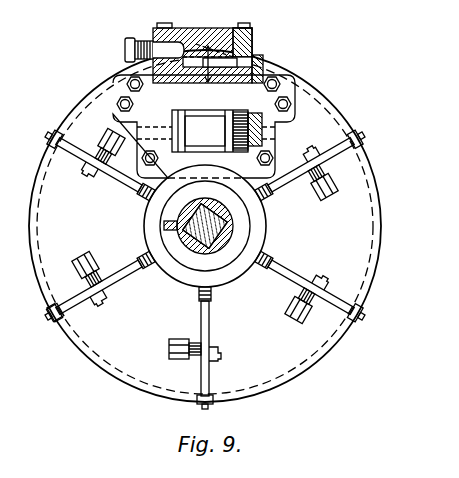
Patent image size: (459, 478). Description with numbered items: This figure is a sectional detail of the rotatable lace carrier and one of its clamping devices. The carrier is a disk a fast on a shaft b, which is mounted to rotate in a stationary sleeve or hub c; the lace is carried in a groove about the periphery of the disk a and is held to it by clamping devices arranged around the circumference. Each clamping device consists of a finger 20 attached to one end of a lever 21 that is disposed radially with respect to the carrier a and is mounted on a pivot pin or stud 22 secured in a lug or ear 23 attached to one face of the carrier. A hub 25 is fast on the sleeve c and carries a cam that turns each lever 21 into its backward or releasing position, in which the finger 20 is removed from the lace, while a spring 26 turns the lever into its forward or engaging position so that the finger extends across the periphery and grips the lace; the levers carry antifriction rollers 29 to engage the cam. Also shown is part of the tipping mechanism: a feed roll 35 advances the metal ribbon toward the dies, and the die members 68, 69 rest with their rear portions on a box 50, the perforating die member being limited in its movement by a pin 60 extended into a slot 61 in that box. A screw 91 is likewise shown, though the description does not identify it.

The disk a is at (382, 223).
The shaft b is at (230, 221).
The stationary sleeve or hub c is at (232, 233).
The finger 20 is at (50, 318).
The lever 21 is at (328, 162).
The pivot pin or stud 22 is at (111, 293).
The lug or ear 23 is at (79, 261).
The hub 25 is at (166, 212).
The spring 26 is at (106, 270).
The antifriction roller 29 is at (153, 270).
The feed roll 35 is at (193, 126).
The box 50 is at (264, 55).
The pin 60 is at (200, 80).
The slot 61 is at (211, 80).
The die member 68 is at (196, 44).
The die member 69 is at (262, 42).
The adjusting screw 91 is at (125, 44).